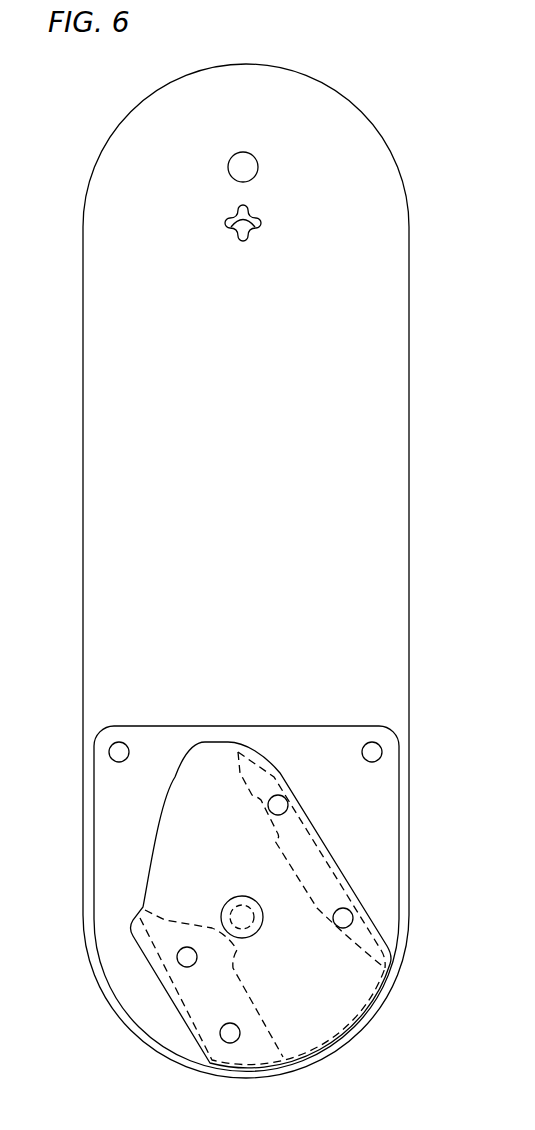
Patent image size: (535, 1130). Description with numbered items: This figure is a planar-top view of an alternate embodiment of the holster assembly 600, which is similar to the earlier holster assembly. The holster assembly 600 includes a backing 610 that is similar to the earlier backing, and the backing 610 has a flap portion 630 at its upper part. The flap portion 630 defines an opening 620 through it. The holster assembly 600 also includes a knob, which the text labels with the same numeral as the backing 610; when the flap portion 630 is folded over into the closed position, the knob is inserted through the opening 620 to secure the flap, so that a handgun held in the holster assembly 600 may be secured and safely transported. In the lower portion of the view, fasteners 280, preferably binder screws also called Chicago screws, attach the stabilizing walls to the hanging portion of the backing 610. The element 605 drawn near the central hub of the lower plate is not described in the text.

The holster assembly 600 is at (90, 128).
The backing 610 is at (82, 540).
The opening 620 is at (226, 228).
The flap portion 630 is at (435, 67).
The hub / pivot 605 is at (243, 896).
The fasteners 280 is at (126, 761).